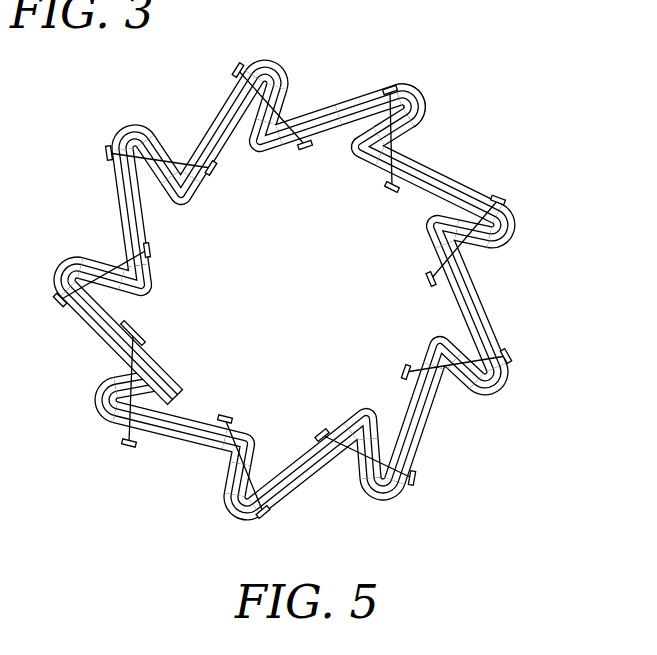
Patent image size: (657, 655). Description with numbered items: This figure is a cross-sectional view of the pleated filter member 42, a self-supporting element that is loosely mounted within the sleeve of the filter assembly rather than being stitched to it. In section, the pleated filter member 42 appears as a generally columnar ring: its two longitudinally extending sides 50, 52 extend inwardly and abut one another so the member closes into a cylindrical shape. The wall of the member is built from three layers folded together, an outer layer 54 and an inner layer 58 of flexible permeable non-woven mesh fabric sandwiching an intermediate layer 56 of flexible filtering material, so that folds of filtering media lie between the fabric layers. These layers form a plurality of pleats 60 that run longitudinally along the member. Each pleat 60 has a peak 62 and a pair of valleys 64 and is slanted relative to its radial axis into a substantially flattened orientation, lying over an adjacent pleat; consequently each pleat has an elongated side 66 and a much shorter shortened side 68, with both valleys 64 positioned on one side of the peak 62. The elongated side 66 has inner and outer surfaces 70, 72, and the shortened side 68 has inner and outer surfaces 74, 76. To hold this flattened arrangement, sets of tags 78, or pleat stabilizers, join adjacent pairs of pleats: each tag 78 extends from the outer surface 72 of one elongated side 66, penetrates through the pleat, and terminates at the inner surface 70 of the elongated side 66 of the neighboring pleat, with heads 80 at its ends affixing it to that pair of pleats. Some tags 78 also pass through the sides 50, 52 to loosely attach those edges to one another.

The pleated filter member 42 is at (302, 63).
The longitudinally extending side 50 is at (289, 254).
The longitudinally extending side 52 is at (163, 413).
The outer layer 54 is at (100, 345).
The intermediate layer 56 is at (130, 325).
The inner layer 58 is at (437, 293).
The pleats 60 is at (417, 71).
The peak 62 is at (427, 100).
The valleys 64 is at (420, 233).
The elongated side 66 is at (348, 99).
The shortened side 68 is at (417, 137).
The inner surface 70 is at (313, 147).
The outer surface 72 is at (363, 100).
The inner surface 74 is at (367, 143).
The outer surface 76 is at (397, 150).
The tags 78 is at (477, 240).
The heads 80 is at (497, 197).